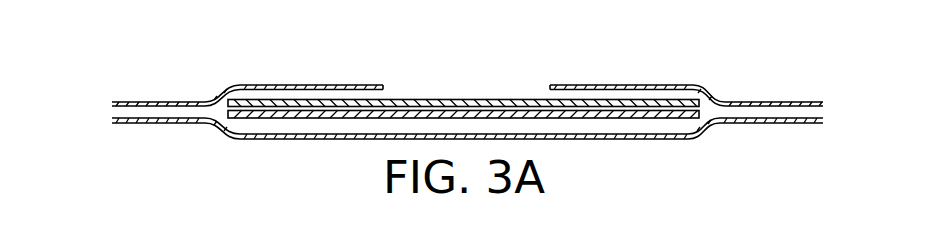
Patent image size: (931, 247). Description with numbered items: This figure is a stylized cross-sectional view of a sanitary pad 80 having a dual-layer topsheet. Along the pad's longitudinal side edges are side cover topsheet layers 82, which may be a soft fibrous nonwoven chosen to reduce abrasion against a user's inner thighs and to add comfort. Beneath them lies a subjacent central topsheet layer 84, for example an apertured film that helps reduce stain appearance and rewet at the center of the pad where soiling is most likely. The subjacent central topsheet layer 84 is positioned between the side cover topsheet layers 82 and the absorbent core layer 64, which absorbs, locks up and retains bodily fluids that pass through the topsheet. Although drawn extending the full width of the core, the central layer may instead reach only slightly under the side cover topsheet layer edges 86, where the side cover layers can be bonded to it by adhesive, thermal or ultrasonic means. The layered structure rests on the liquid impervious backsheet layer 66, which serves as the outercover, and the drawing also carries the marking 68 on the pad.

The catheter assembly 80 is at (617, 50).
The outer sheath wall 82 is at (232, 85).
The upper inner layer 84 is at (468, 100).
The lower inner layer 64 is at (637, 119).
The opening in outer sheath 86 is at (383, 72).
The proximal tube 66 is at (213, 124).
The distal tube 68 is at (762, 102).